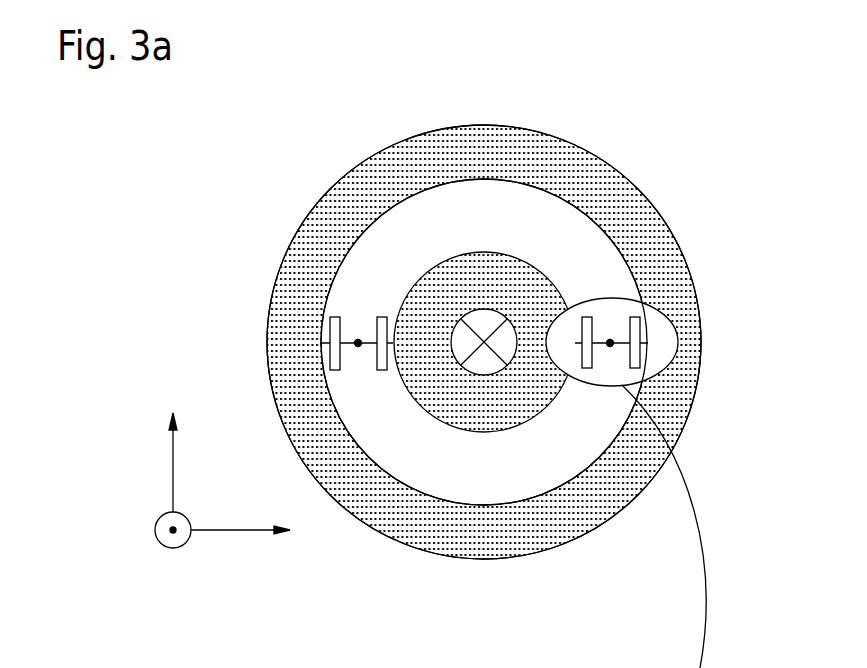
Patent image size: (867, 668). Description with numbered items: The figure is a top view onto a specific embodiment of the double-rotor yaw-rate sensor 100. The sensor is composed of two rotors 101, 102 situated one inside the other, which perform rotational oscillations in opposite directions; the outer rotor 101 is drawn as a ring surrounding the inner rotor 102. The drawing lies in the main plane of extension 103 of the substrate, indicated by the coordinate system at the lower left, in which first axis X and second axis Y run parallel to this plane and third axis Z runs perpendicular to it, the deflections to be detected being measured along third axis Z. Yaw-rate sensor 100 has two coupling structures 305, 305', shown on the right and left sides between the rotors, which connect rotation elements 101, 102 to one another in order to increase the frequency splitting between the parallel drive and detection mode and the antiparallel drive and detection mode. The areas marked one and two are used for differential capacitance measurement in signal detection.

The yaw-rate sensor 100 is at (484, 86).
The rotor 101 is at (348, 187).
The rotor 102 is at (533, 282).
The main plane of extension 103 is at (198, 375).
The coupling structure 305 is at (502, 396).
The coupling structure 305' is at (323, 288).